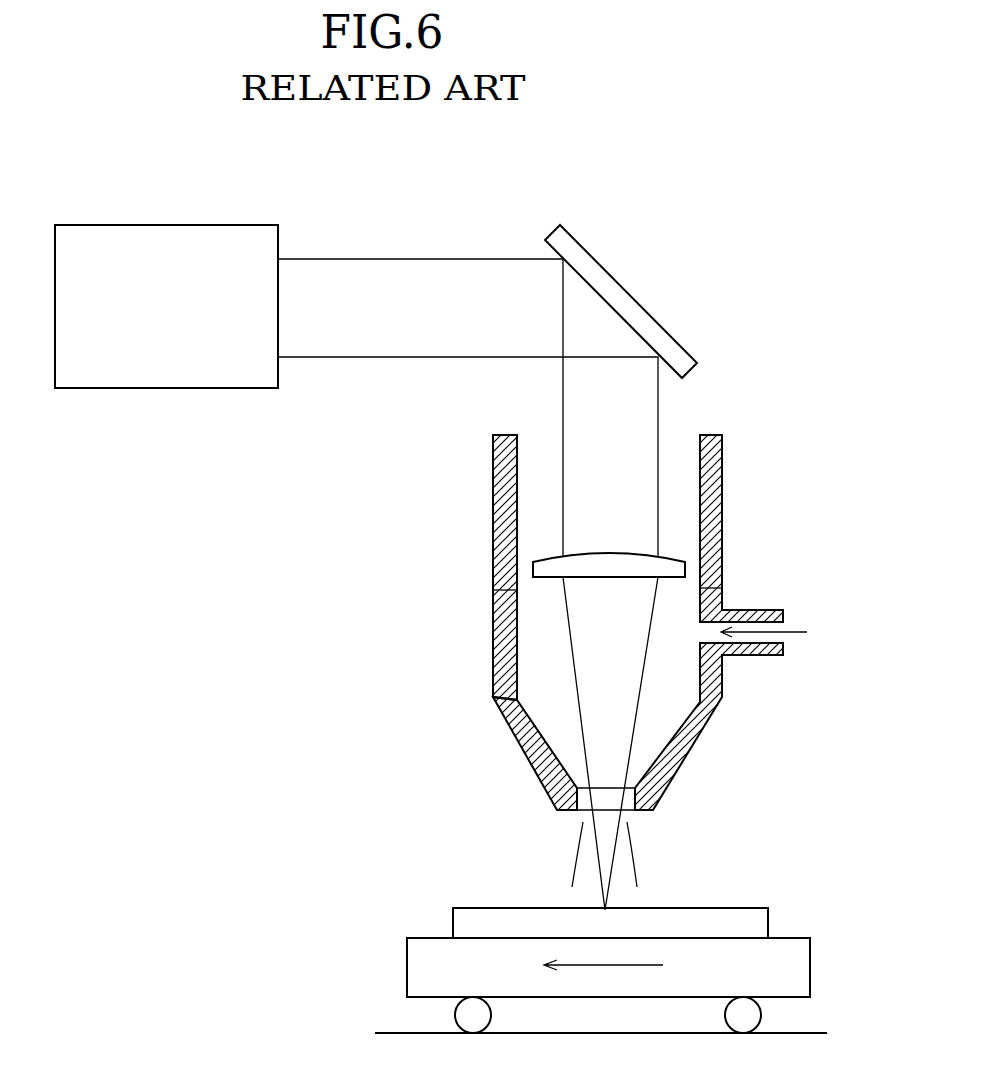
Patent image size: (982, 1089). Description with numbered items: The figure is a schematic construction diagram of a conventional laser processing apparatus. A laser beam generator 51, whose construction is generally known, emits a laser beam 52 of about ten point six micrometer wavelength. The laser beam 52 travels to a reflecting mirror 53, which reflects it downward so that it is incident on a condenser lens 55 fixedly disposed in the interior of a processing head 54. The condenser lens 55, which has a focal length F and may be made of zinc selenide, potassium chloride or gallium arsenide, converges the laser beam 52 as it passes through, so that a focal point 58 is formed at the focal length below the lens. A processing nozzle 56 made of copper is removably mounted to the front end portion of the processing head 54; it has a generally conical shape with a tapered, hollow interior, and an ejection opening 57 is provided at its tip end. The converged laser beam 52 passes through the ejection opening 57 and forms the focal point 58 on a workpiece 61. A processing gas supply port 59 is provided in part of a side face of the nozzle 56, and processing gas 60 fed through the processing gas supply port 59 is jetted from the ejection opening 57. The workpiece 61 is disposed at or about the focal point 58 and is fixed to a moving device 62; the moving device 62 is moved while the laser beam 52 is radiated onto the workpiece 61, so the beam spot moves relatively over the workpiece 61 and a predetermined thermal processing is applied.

The laser beam generator 51 is at (167, 363).
The laser beam 52 is at (382, 360).
The reflecting mirror 53 is at (615, 293).
The processing head 54 is at (502, 487).
The condenser lens 55 is at (545, 568).
The processing nozzle 56 is at (512, 723).
The ejection opening 57 is at (583, 812).
The focal point 58 is at (617, 907).
The processing gas supply port 59 is at (752, 610).
The processing gas 60 is at (795, 636).
The workpiece 61 is at (460, 922).
The moving device 62 is at (418, 963).